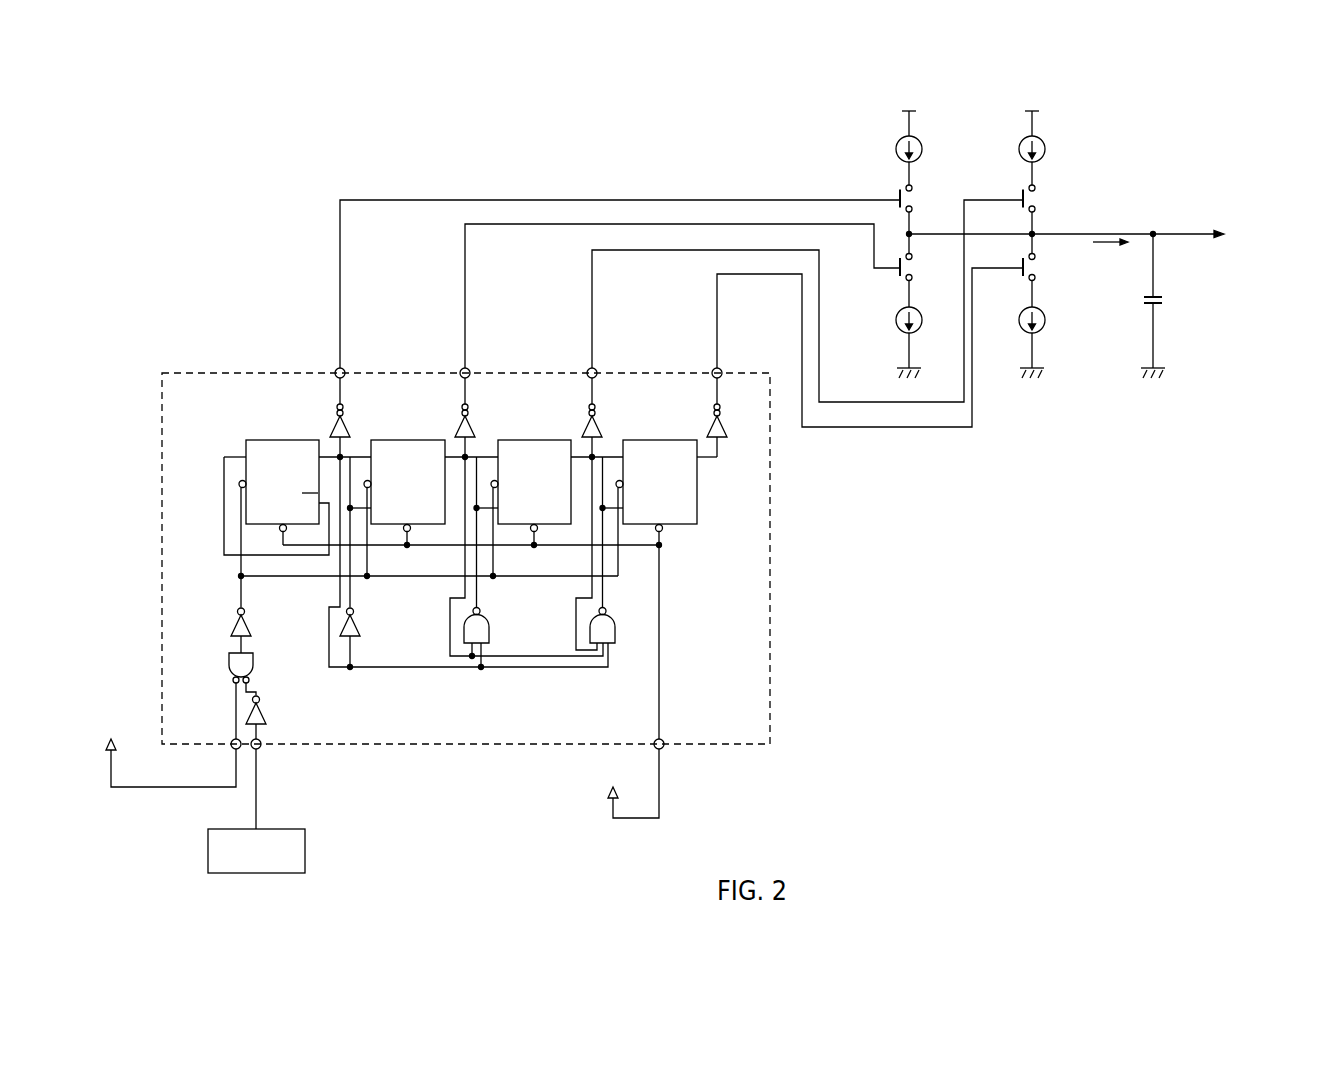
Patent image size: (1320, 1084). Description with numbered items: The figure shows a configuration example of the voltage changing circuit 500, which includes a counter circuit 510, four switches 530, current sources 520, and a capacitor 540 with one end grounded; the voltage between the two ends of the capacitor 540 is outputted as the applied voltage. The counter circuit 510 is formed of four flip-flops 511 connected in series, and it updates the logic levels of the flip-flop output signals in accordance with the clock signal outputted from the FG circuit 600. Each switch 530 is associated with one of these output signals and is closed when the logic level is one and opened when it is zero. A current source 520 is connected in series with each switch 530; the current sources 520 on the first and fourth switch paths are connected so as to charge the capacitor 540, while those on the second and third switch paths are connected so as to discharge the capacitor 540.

The voltage changing circuit 500 is at (655, 174).
The counter circuit 510 is at (197, 373).
The flip-flop 511 is at (287, 440).
The current source 520 is at (922, 145).
The switch 530 is at (898, 207).
The capacitor 540 is at (1162, 310).
The FG circuit 600 is at (305, 853).